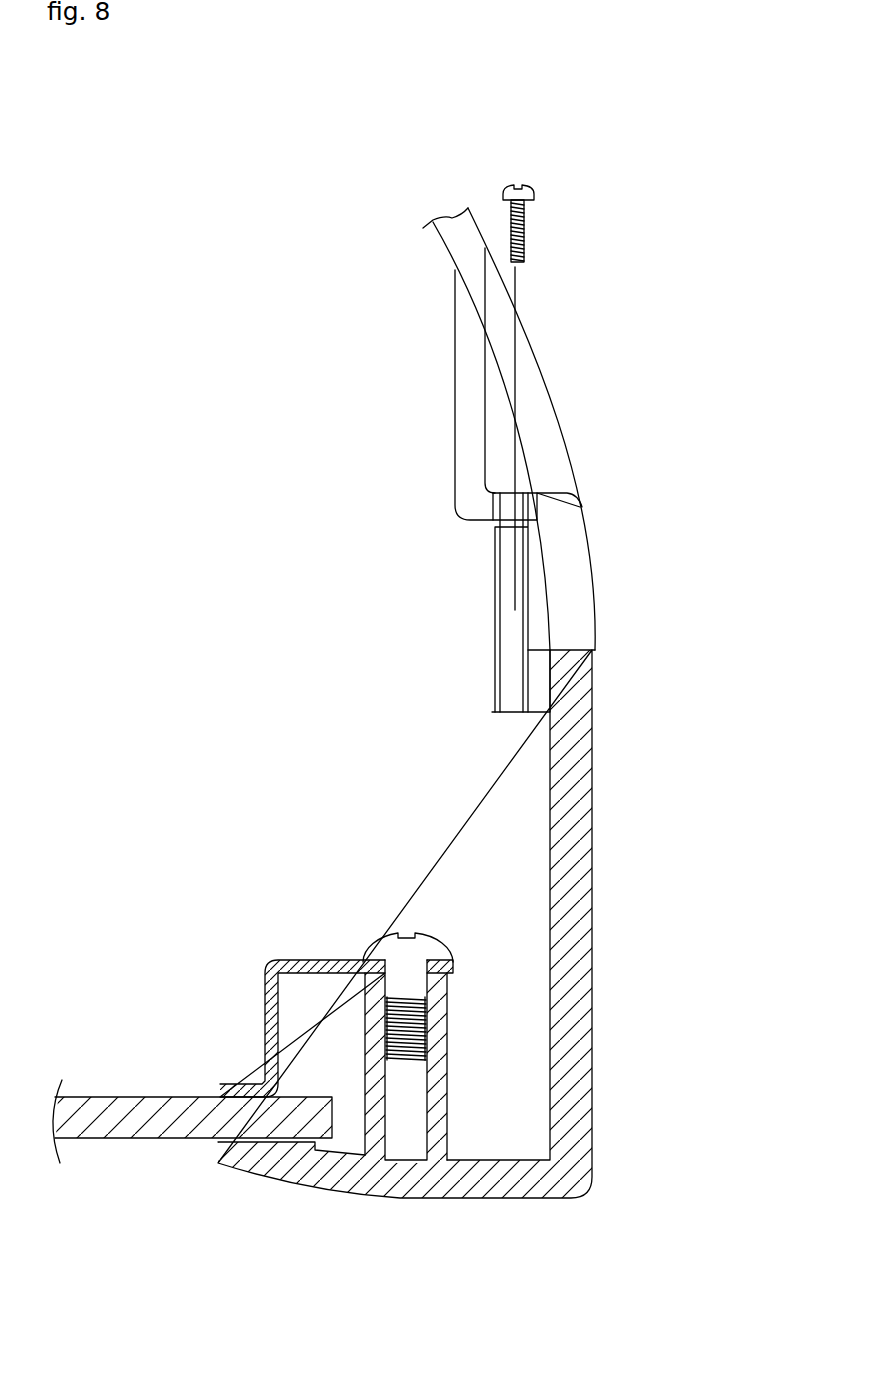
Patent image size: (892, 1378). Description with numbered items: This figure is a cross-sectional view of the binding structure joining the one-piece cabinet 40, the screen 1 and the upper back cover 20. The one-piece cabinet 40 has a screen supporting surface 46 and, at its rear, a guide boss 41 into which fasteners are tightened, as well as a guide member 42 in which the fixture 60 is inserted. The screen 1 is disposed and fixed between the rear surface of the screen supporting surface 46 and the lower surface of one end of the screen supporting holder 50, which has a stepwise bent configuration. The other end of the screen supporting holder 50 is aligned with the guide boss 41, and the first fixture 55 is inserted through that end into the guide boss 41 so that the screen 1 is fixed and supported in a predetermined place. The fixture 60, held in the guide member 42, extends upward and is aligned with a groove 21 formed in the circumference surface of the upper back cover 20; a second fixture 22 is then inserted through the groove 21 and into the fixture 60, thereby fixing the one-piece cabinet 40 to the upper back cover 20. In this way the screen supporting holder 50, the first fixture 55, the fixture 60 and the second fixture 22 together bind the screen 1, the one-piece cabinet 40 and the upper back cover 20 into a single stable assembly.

The screen 1 is at (164, 1120).
The upper back cover 20 is at (533, 397).
The groove 21 is at (492, 512).
The second fixture 22 is at (522, 208).
The one-piece cabinet 40 is at (480, 936).
The guide boss 41 is at (440, 1093).
The guide member 42 is at (537, 663).
The screen supporting surface 46 is at (462, 1190).
The screen supporting holder 50 is at (307, 962).
The first fixture 55 is at (427, 947).
The fixture 60 is at (517, 553).